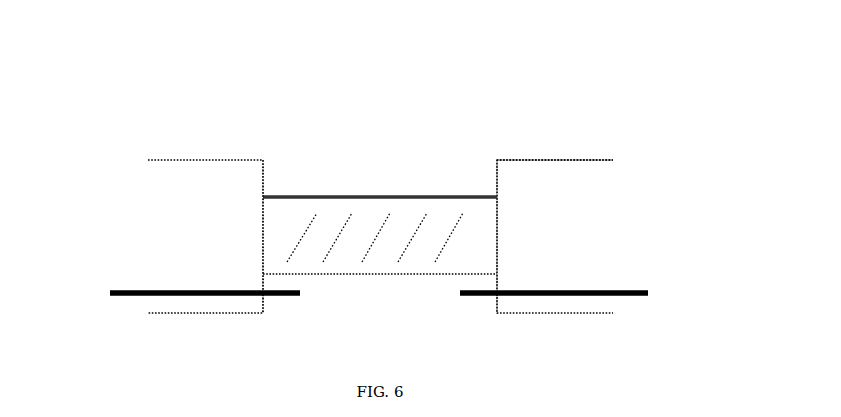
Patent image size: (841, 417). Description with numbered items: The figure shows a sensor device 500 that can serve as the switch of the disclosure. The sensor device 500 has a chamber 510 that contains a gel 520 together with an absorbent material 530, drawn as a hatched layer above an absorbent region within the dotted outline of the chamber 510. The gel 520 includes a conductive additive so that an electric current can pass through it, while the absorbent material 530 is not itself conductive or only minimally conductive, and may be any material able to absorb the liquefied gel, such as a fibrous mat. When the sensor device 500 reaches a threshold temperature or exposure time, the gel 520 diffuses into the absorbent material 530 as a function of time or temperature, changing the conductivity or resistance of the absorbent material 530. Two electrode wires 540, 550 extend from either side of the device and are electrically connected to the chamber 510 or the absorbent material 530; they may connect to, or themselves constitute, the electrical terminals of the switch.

The sensor device 500 is at (645, 138).
The chamber 510 is at (497, 230).
The gel 520 is at (420, 210).
The absorbent material 530 is at (263, 278).
The electrode wire 540 is at (120, 290).
The electrode wire 550 is at (630, 289).